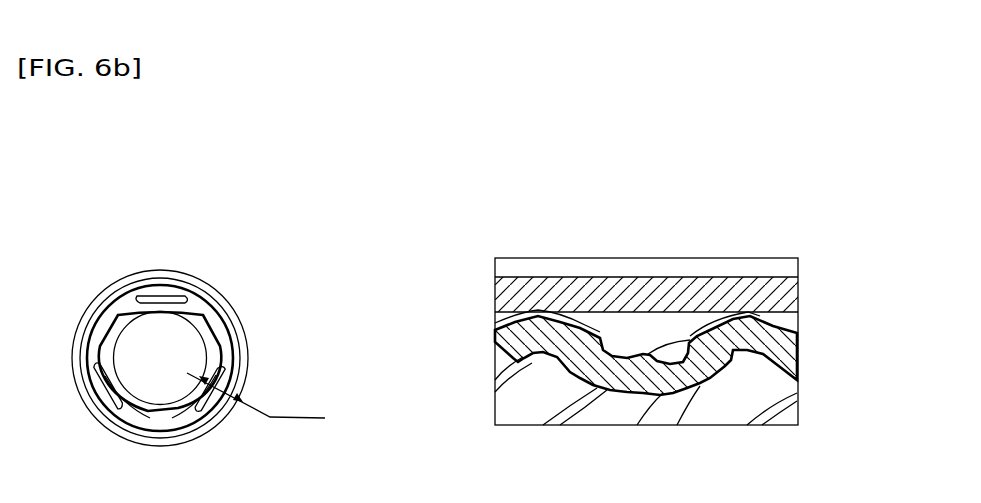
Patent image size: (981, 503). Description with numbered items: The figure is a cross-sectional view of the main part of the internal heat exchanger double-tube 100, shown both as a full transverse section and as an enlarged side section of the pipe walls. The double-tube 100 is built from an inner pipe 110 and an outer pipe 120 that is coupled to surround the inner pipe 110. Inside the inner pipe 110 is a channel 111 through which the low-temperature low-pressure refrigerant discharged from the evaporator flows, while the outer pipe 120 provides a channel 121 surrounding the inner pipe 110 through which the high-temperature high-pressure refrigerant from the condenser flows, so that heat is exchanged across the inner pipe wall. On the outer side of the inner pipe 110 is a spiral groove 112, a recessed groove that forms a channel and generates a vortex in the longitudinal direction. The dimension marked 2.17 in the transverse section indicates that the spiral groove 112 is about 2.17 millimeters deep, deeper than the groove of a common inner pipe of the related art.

The internal heat exchanger double-tube 100 is at (114, 270).
The inner pipe 110 is at (227, 327).
The channel 111 is at (735, 402).
The spiral groove 112 is at (218, 372).
The outer pipe 120 is at (197, 287).
The channel 121 is at (618, 323).
The wall thickness dimension 2.17 is at (260, 396).